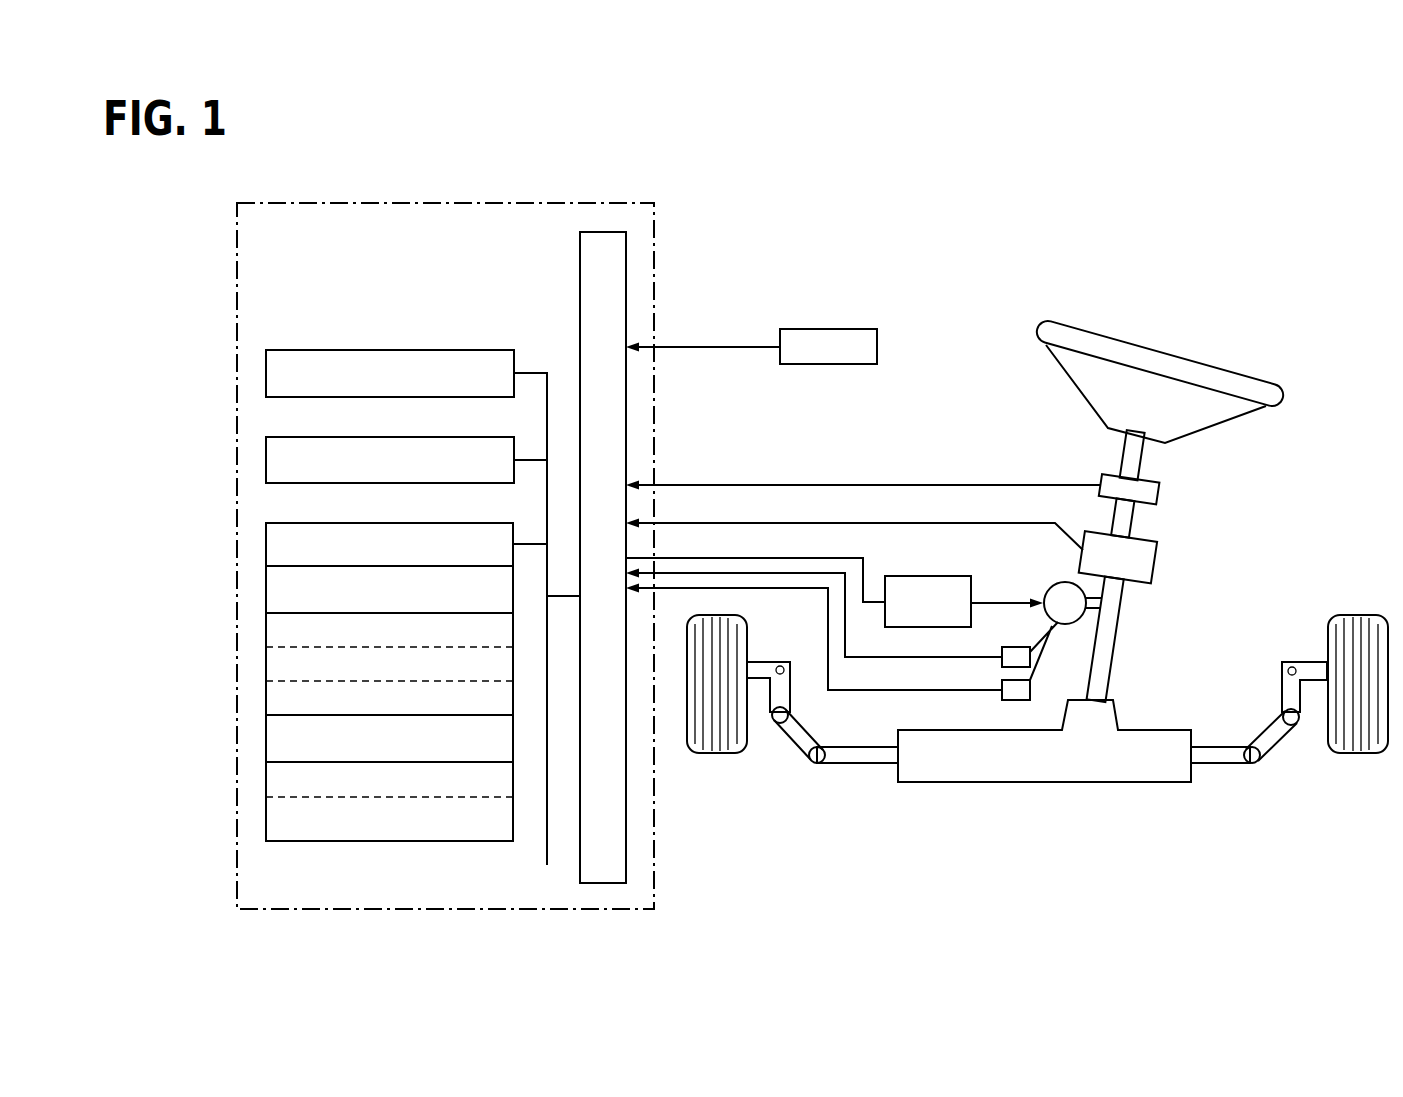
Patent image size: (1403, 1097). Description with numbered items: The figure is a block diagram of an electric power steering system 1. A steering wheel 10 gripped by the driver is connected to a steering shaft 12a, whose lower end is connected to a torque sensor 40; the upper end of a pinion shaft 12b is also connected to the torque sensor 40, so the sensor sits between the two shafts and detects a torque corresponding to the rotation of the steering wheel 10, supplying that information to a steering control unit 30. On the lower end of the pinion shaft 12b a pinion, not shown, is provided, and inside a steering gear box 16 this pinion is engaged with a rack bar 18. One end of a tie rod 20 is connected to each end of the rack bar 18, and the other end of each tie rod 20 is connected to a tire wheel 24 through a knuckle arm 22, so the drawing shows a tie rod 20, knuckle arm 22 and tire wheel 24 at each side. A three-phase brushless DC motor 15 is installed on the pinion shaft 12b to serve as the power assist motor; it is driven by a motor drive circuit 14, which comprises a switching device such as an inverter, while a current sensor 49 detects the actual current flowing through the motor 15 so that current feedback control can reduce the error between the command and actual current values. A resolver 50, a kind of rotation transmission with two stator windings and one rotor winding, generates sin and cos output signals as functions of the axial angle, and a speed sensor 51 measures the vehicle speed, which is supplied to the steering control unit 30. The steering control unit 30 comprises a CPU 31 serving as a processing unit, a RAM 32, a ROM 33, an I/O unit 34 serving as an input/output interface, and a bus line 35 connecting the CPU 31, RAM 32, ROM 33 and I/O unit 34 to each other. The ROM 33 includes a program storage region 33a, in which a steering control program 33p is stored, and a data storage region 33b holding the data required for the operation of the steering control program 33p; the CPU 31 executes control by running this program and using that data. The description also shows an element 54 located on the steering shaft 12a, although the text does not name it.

The electric power steering system 1 is at (1130, 205).
The steering wheel 10 is at (1162, 358).
The steering shaft 12a is at (1126, 445).
The pinion shaft 12b is at (1100, 697).
The motor drive circuit 14 is at (922, 576).
The three-phase brushless DC motor 15 is at (1053, 584).
The steering gear box 16 is at (1062, 782).
The rack bar 18 is at (855, 757).
The tie rod 20 is at (800, 740).
The knuckle arm 22 is at (766, 663).
The tire wheel 24 is at (713, 753).
The steering control unit 30 is at (470, 203).
The CPU 31 is at (470, 350).
The RAM 32 is at (470, 437).
The ROM 33 is at (470, 523).
The program storage region 33a is at (266, 590).
The steering control program 33p is at (266, 625).
The data storage region 33b is at (266, 739).
The I/O unit 34 is at (579, 865).
The bus line 35 is at (547, 845).
The torque sensor 40 is at (1148, 558).
The current sensor 49 is at (1015, 647).
The resolver 50 is at (1010, 699).
The speed sensor 51 is at (826, 328).
The steering angle sensor 54 is at (1158, 490).